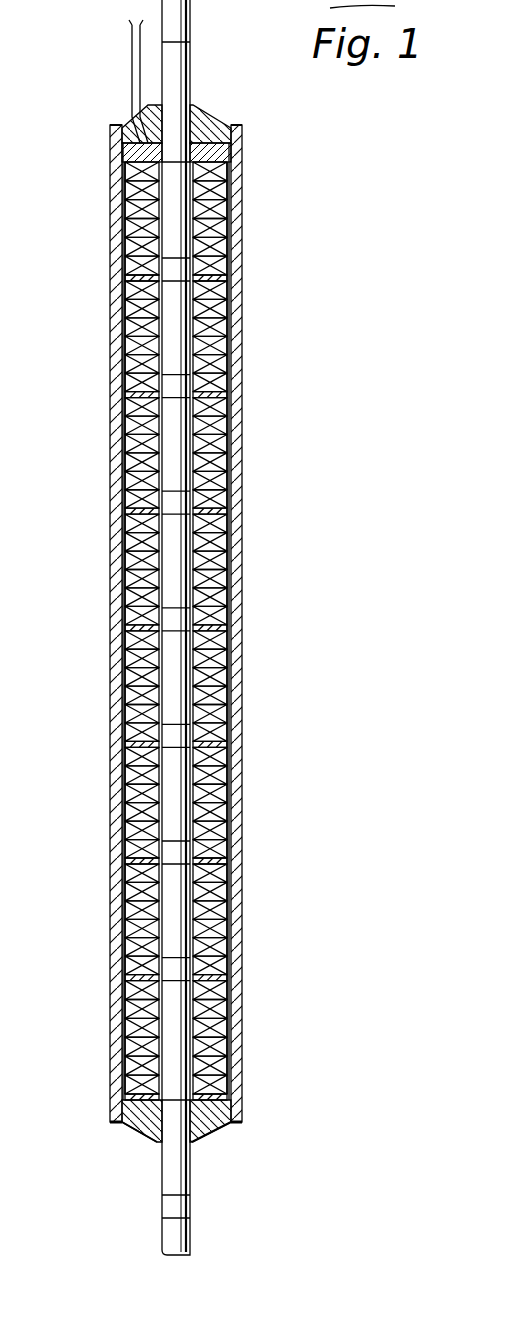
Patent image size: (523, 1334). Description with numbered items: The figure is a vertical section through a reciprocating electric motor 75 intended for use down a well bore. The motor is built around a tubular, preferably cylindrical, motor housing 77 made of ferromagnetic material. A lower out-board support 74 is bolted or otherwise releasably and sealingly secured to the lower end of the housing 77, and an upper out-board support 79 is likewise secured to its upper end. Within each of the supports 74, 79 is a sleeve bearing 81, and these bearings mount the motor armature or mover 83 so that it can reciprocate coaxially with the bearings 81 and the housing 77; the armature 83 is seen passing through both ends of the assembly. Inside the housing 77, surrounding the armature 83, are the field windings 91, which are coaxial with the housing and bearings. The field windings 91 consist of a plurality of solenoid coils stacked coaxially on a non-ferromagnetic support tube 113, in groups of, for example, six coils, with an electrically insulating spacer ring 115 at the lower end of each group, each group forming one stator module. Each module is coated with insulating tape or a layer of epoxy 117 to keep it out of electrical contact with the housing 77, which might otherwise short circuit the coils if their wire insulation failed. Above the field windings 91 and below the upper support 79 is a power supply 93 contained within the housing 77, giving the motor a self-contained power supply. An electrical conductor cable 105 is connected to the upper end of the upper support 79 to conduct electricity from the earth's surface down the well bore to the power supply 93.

The lower out-board support 74 is at (135, 1122).
The reciprocating electric motor 75 is at (243, 318).
The motor housing 77 is at (240, 603).
The upper out-board support 79 is at (220, 135).
The sleeve bearing 81 is at (200, 118).
The motor armature 83 is at (183, 449).
The field windings 91 is at (222, 932).
The power supply 93 is at (127, 153).
The electrical conductor cable 105 is at (132, 52).
The support tube 113 is at (127, 712).
The spacer ring 115 is at (138, 408).
The insulating tape or epoxy layer 117 is at (127, 778).